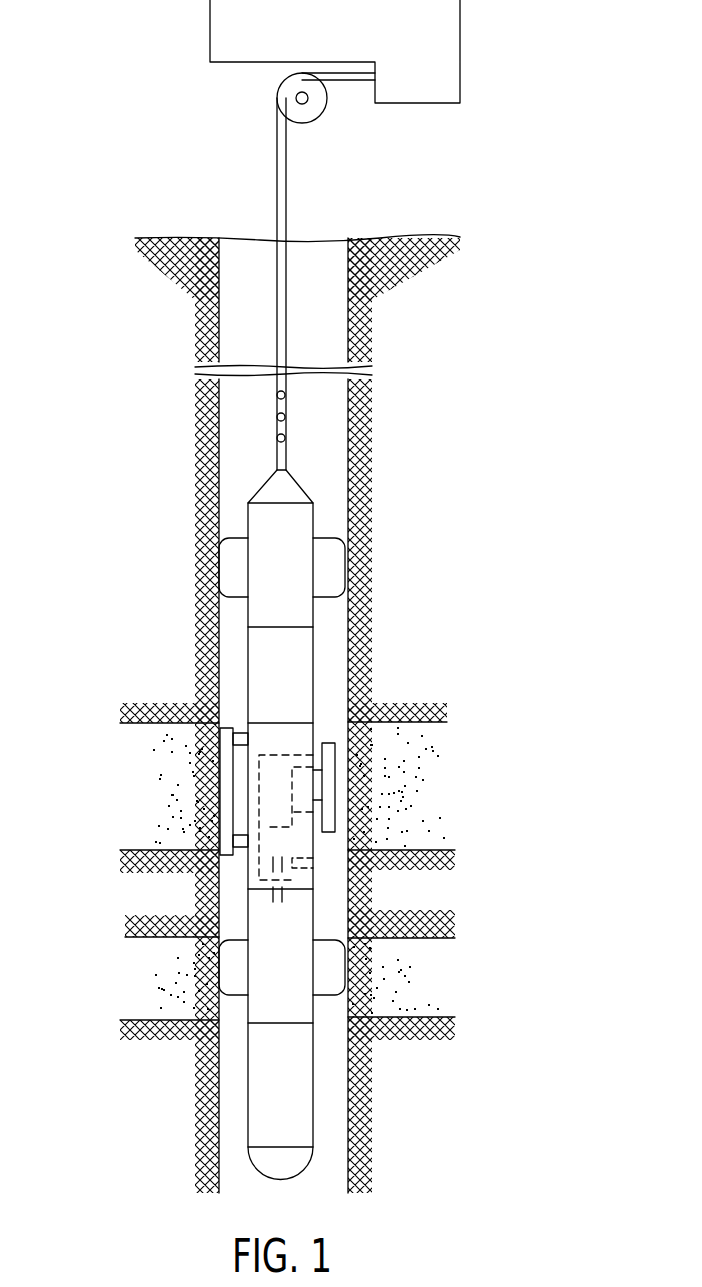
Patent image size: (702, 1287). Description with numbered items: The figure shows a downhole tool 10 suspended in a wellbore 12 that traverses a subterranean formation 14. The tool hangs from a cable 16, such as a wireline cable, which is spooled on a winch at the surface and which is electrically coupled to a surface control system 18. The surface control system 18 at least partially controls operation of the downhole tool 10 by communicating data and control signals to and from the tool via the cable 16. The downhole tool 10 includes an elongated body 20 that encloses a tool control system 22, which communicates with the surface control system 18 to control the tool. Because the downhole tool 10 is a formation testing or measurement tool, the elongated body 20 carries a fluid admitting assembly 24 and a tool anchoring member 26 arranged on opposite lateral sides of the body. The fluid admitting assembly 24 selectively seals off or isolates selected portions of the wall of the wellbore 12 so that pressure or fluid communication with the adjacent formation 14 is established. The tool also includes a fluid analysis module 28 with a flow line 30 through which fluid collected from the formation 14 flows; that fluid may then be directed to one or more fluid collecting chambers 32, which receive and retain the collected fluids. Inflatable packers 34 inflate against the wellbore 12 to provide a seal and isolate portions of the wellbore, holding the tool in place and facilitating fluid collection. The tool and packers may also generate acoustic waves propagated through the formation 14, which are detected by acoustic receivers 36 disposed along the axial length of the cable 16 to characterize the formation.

The downhole tool 10 is at (325, 658).
The wellbore 12 is at (348, 276).
The subterranean formation 14 is at (422, 807).
The cable 16 is at (273, 160).
The surface control system 18 is at (417, 103).
The elongated body 20 is at (295, 532).
The tool control system 22 is at (269, 689).
The fluid admitting assembly 24 is at (327, 755).
The tool anchoring member 26 is at (225, 783).
The fluid analysis module 28 is at (305, 860).
The flow line 30 is at (303, 875).
The fluid collecting chambers 32 is at (270, 972).
The inflatable packers 34 is at (232, 568).
The acoustic receivers 36 is at (285, 437).